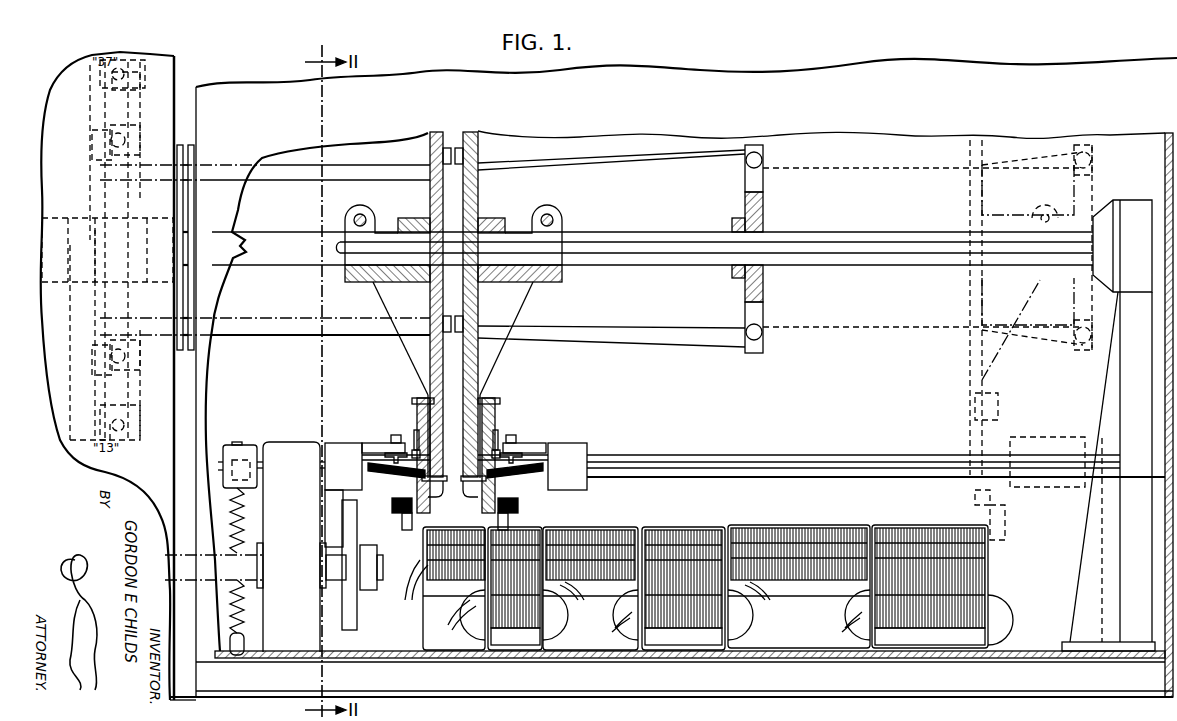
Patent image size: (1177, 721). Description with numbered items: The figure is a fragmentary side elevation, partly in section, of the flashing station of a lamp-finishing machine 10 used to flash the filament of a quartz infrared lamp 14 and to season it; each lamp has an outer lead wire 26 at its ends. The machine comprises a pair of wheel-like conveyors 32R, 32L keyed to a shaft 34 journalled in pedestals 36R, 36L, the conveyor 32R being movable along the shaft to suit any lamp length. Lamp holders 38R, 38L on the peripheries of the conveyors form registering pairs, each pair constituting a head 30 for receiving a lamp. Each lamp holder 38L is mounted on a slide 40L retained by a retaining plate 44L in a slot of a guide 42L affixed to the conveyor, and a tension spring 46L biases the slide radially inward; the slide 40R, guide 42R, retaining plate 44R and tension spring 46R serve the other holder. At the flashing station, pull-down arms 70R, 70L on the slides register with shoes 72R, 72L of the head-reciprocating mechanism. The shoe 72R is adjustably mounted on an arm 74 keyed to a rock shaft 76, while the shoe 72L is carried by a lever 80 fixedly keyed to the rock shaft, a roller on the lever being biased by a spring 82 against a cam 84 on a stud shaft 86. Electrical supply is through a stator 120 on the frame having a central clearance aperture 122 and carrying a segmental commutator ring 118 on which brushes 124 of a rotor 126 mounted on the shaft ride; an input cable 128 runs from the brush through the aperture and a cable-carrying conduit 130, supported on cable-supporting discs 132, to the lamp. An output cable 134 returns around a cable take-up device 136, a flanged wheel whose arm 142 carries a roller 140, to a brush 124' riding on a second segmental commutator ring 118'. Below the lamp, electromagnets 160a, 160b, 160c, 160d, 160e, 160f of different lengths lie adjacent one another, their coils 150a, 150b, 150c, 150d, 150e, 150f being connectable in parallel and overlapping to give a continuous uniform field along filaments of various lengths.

The lamp-finishing machine 10 is at (668, 65).
The quartz infrared lamp 14 is at (412, 540).
The outer lead wire 26 is at (392, 502).
The head 30 is at (487, 516).
The conveyor 32L is at (428, 202).
The conveyor 32R is at (480, 202).
The shaft 34 is at (600, 232).
The pedestal 36L is at (70, 410).
The pedestal 36R is at (1118, 390).
The lamp holder 38L is at (402, 526).
The lamp holder 38R is at (520, 516).
The slide 40L is at (414, 450).
The slide 40R is at (498, 450).
The guide 42L is at (428, 398).
The guide 42R is at (482, 398).
The retaining plate 44L is at (420, 400).
The retaining plate 44R is at (492, 400).
The tension spring 46L is at (416, 432).
The tension spring 46R is at (496, 432).
The pull-down arm 70L is at (414, 476).
The pull-down arm 70R is at (500, 476).
The shoe 72L is at (343, 495).
The shoe 72R is at (532, 466).
The arm 74 is at (374, 443).
The rock shaft 76 is at (684, 455).
The lever 80 is at (330, 510).
The spring 82 is at (248, 542).
The cam 84 is at (357, 610).
The stud shaft 86 is at (330, 588).
The segmental commutator ring 118 is at (141, 243).
The second segmental commutator ring 118' is at (145, 247).
The stator 120 is at (180, 67).
The central clearance aperture 122 is at (183, 145).
The brush 124 is at (116, 253).
The brush 124' is at (108, 251).
The rotor 126 is at (95, 207).
The input cable 128 is at (95, 390).
The cable-carrying conduit 130 is at (266, 178).
The cable-supporting discs 132 is at (191, 146).
The output cable 134 is at (645, 168).
The cable take-up device 136 is at (763, 288).
The roller 140 is at (770, 159).
The arm 142 is at (745, 185).
The coil 150a is at (418, 612).
The coil 150b is at (555, 636).
The coil 150c is at (600, 602).
The coil 150d is at (688, 640).
The coil 150e is at (800, 600).
The coil 150f is at (930, 636).
The first electromagnet 160a is at (456, 582).
The electromagnet 160b is at (516, 634).
The electromagnet 160c is at (618, 520).
The electromagnet 160d is at (704, 520).
The electromagnet 160e is at (790, 520).
The electromagnet 160f is at (916, 520).